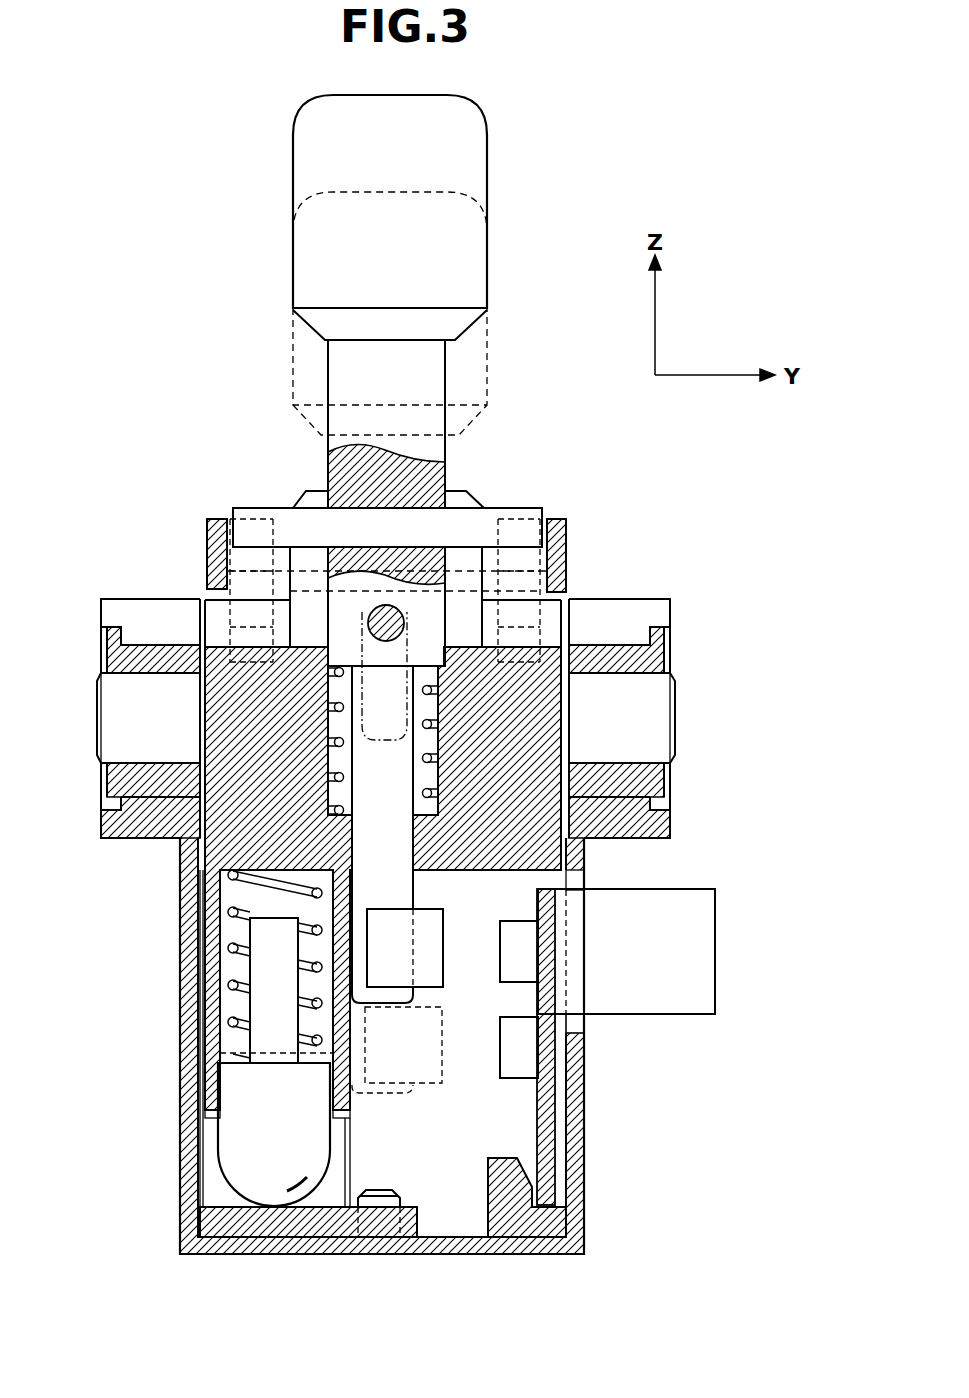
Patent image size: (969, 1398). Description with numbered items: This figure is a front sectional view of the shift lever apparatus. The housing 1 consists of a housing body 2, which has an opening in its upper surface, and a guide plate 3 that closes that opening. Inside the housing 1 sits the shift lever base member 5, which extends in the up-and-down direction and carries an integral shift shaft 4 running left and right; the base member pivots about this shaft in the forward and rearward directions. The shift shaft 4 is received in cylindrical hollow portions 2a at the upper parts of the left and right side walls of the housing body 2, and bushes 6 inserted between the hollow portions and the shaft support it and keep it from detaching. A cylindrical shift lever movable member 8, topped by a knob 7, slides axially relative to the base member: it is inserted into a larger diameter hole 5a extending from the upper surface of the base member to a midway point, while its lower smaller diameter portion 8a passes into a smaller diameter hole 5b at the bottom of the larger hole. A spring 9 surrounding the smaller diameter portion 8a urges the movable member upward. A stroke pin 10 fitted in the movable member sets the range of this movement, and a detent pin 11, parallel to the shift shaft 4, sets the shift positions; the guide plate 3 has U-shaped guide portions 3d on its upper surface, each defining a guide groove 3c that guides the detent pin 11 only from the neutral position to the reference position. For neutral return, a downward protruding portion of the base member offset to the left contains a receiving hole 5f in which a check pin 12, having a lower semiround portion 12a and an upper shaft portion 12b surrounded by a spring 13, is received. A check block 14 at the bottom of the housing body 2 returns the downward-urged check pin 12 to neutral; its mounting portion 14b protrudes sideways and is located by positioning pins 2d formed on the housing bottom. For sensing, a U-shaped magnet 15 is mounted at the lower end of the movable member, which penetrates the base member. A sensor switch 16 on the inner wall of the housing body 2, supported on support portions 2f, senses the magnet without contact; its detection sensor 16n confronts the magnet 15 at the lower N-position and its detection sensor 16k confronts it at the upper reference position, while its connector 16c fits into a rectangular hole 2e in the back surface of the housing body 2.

The housing 1 is at (760, 525).
The housing body 2 is at (660, 612).
The cylindrical hollow portions 2a is at (113, 838).
The positioning pins 2d is at (380, 1190).
The rectangular hole 2e is at (580, 882).
The support portions 2f is at (583, 1175).
The guide plate 3 is at (566, 555).
The guide grooves 3c is at (525, 556).
The guide portions 3d is at (208, 545).
The shift shaft 4 is at (113, 718).
The shift lever base member 5 is at (228, 850).
The larger diameter hole 5a is at (453, 775).
The smaller diameter hole 5b is at (353, 852).
The receiving hole 5f is at (330, 905).
The bushes 6 is at (110, 650).
The knob 7 is at (300, 165).
The shift lever movable member 8 is at (329, 395).
The smaller diameter portion 8a is at (400, 887).
The spring 9 is at (336, 764).
The stroke pin 10 is at (395, 612).
The detent pin 11 is at (290, 518).
The check pin 12 is at (230, 1133).
The semiround portion 12a is at (252, 1193).
The shaft portion 12b is at (257, 1003).
The spring 13 is at (230, 984).
The check block 14 is at (210, 1178).
The mounting portion 14b is at (417, 1217).
The magnet 15 is at (430, 975).
The sensor switch 16 is at (595, 1047).
The connector 16c is at (705, 921).
The detection sensor 16k is at (527, 967).
The detection sensor 16n is at (527, 1047).